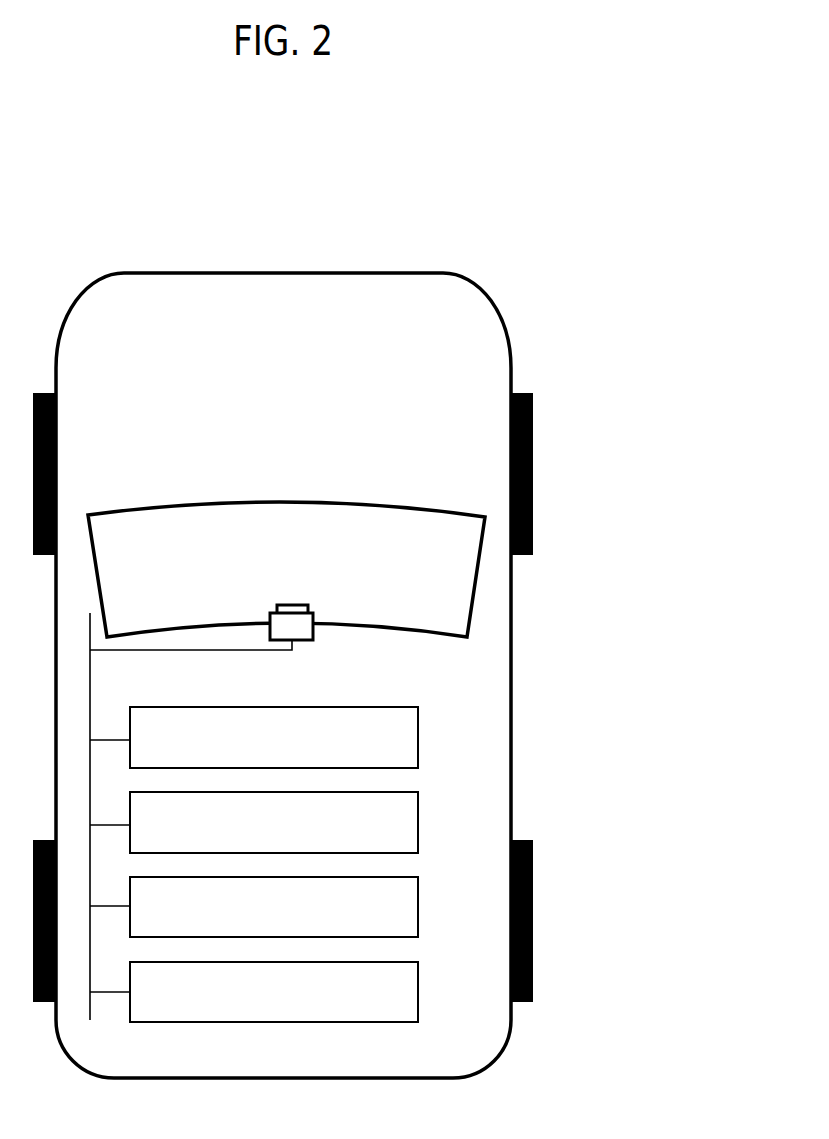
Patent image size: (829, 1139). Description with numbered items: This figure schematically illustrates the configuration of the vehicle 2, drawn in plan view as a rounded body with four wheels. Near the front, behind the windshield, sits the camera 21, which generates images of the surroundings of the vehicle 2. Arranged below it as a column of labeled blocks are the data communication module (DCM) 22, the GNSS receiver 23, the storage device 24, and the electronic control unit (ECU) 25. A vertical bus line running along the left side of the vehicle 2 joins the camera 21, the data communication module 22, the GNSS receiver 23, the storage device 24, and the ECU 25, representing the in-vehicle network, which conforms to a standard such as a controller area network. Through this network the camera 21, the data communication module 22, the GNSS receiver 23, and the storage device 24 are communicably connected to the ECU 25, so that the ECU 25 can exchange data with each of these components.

The vehicle 2 is at (422, 264).
The camera 21 is at (315, 630).
The data communication module 22 is at (418, 750).
The GNSS receiver 23 is at (418, 835).
The storage device 24 is at (418, 920).
The electronic control unit 25 is at (418, 1004).